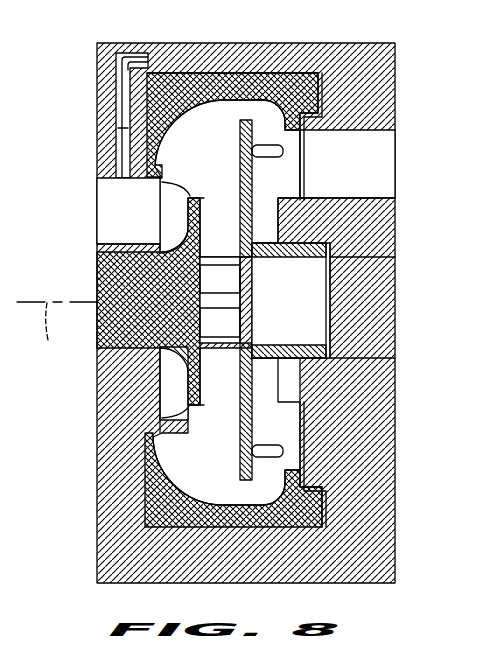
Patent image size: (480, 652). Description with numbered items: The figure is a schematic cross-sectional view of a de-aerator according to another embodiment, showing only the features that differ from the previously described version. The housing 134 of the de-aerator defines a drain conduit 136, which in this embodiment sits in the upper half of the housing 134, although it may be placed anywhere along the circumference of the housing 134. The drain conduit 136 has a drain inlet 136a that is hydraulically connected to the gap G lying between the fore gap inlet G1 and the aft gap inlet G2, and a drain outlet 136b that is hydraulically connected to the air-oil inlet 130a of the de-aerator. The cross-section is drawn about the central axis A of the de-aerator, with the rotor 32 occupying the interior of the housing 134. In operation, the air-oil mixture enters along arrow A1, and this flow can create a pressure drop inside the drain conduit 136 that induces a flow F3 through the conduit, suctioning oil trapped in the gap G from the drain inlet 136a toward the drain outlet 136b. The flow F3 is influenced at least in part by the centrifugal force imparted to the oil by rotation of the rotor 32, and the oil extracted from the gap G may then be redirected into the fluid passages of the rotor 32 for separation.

The housing 134 is at (350, 424).
The rotor 32 is at (316, 89).
The drain conduit 136 is at (98, 60).
The drain inlet 136a is at (190, 58).
The drain outlet 136b is at (138, 186).
The air-oil inlet 130a is at (85, 228).
The gap G is at (253, 65).
The fore gap inlet G1 is at (183, 164).
The aft gap inlet G2 is at (312, 147).
The flow F3 is at (122, 130).
The arrow A1 is at (120, 212).
The axis A is at (57, 334).